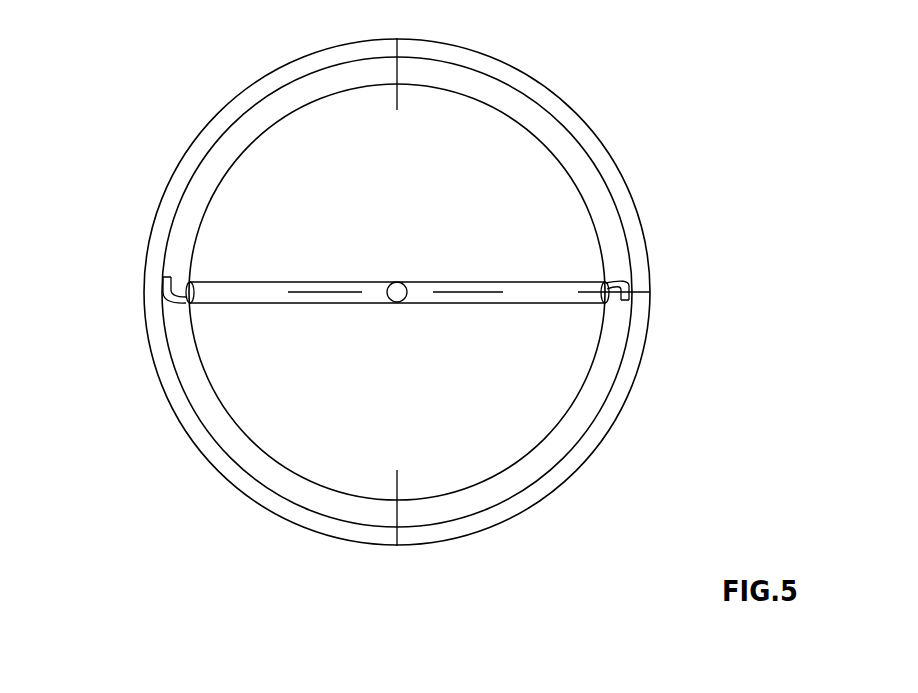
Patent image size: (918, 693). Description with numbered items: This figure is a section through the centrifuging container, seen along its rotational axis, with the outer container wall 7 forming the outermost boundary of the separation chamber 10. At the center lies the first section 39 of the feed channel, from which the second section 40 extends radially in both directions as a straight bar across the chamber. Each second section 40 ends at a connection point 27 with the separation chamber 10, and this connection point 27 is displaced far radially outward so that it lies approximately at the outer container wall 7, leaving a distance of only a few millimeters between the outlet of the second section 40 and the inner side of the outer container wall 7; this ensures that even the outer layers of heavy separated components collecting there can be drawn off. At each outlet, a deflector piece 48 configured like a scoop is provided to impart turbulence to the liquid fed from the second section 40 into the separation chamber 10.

The outer container wall 7 is at (612, 420).
The separation chamber 10 is at (603, 375).
The connection point 27 is at (608, 300).
The first section 39 is at (405, 288).
The second section 40 is at (238, 287).
The deflector piece 48 is at (218, 291).